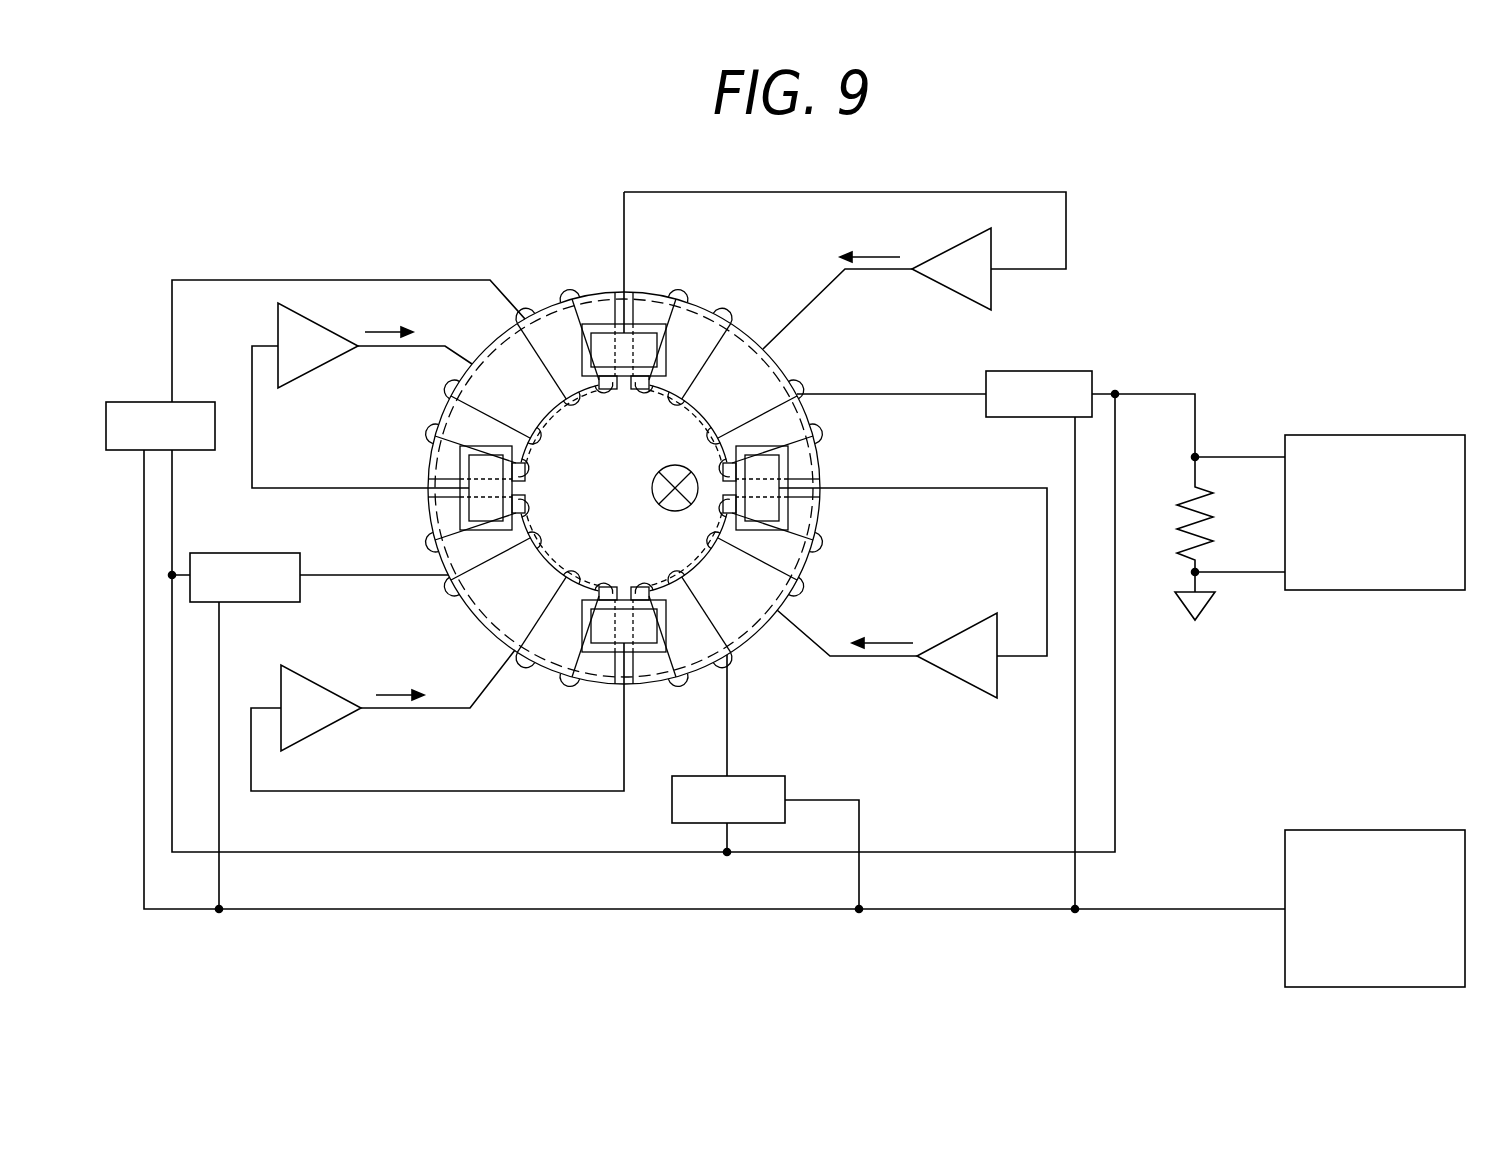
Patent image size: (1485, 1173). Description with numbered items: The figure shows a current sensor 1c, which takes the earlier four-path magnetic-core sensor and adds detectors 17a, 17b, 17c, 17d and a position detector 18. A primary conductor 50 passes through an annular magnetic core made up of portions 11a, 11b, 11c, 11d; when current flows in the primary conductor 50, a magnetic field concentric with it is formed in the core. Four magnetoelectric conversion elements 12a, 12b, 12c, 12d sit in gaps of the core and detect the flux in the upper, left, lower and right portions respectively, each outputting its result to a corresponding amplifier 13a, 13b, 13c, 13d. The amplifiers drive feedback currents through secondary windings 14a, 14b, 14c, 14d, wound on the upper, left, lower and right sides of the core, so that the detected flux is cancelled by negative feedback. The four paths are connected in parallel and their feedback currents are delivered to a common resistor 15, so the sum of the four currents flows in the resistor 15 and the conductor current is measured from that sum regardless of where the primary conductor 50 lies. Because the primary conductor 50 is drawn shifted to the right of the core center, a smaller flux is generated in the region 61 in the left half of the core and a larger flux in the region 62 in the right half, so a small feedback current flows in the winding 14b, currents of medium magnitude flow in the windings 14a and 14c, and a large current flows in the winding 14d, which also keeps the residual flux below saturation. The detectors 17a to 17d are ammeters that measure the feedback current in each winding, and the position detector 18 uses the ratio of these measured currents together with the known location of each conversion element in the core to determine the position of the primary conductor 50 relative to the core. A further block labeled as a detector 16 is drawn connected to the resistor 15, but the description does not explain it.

The current sensor 1c is at (1202, 289).
The magnetic core 11a is at (792, 364).
The magnetic core 11b is at (492, 338).
The magnetic core 11c is at (466, 624).
The magnetic core 11d is at (762, 638).
The magnetoelectric conversion element 12a is at (617, 347).
The magnetoelectric conversion element 12b is at (485, 477).
The magnetoelectric conversion element 12c is at (638, 648).
The magnetoelectric conversion element 12d is at (762, 473).
The amplifier 13a is at (947, 288).
The amplifier 13b is at (322, 367).
The amplifier 13c is at (329, 725).
The amplifier 13d is at (953, 676).
The secondary winding 14a is at (548, 293).
The secondary winding 14b is at (420, 547).
The secondary winding 14c is at (538, 680).
The secondary winding 14d is at (840, 538).
The resistor 15 is at (1214, 512).
The detector 16 is at (1372, 435).
The detector 17a is at (153, 402).
The detector 17b is at (247, 553).
The detector 17c is at (758, 776).
The detector 17d is at (1055, 371).
The position detector 18 is at (1372, 830).
The primary conductor 50 is at (652, 488).
The region 61 is at (462, 368).
The region 62 is at (752, 345).